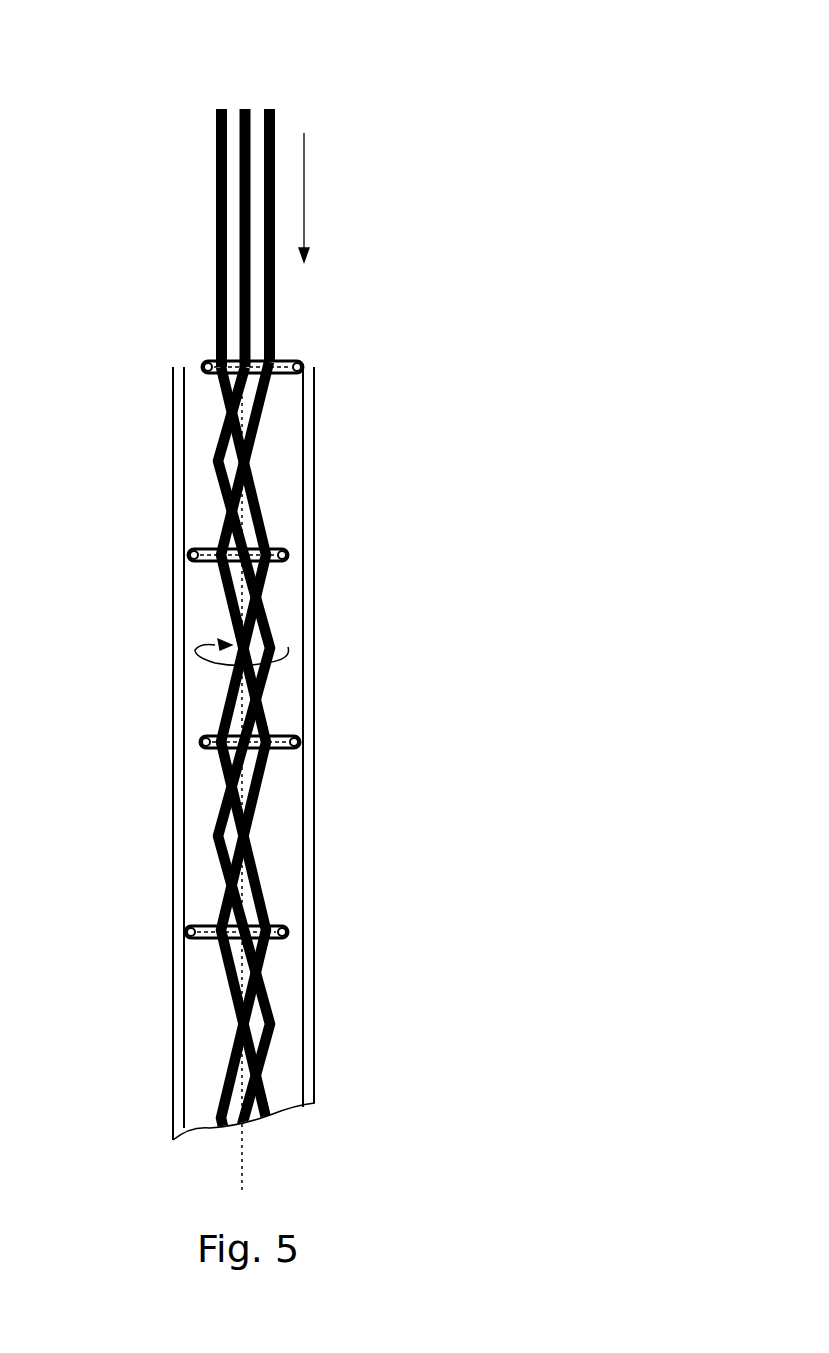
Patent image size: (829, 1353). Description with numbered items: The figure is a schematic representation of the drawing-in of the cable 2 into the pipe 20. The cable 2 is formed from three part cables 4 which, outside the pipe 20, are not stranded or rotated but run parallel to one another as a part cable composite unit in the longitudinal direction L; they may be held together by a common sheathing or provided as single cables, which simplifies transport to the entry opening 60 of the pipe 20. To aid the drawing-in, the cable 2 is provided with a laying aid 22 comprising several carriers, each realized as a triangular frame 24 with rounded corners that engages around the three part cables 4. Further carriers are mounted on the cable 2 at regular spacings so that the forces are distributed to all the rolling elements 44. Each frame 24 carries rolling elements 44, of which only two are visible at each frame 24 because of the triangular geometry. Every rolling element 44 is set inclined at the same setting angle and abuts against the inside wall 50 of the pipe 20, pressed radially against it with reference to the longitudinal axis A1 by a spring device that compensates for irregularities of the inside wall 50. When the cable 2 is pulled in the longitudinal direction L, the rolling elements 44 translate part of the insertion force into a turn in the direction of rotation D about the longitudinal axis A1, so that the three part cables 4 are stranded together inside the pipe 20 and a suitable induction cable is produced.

The cable 2 is at (292, 409).
The part cables 4 is at (225, 108).
The pipe 20 is at (318, 767).
The laying aid 22 is at (290, 542).
The frame 24 is at (185, 562).
The rolling elements 44 is at (200, 745).
The inside wall 50 is at (303, 803).
The entry opening 60 is at (190, 360).
The longitudinal direction L is at (307, 195).
The direction of rotation D is at (200, 666).
The longitudinal axis A1 is at (242, 1160).